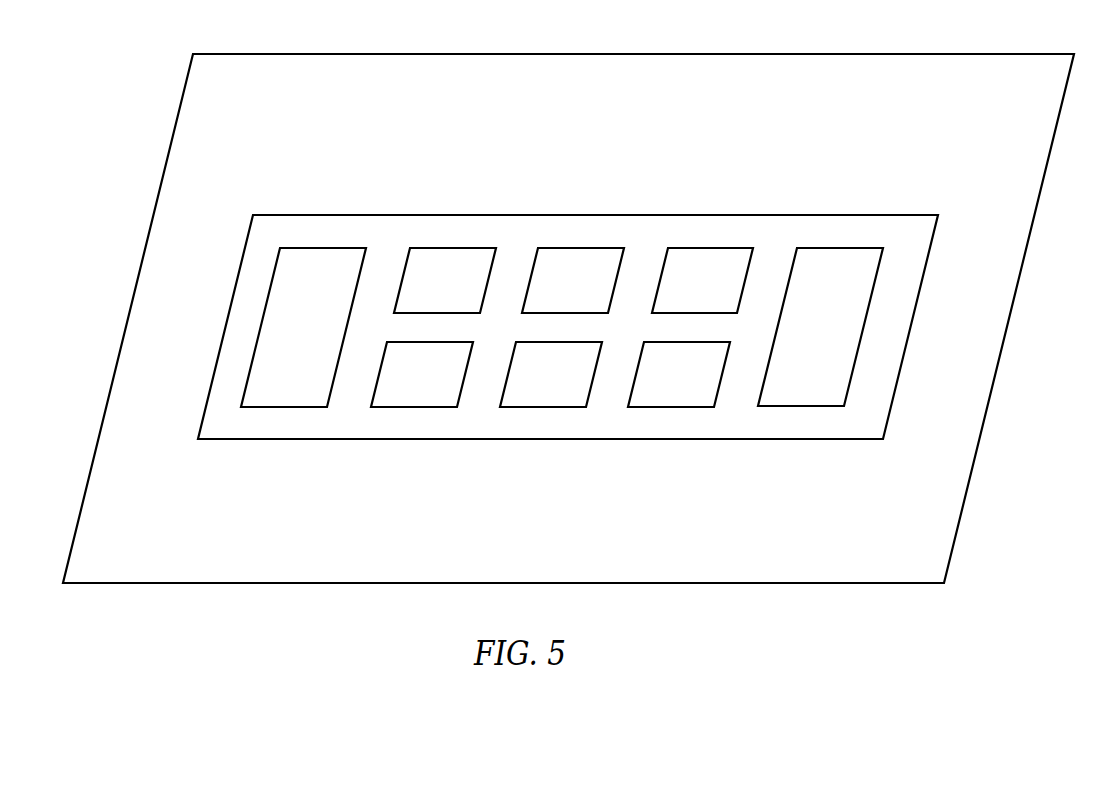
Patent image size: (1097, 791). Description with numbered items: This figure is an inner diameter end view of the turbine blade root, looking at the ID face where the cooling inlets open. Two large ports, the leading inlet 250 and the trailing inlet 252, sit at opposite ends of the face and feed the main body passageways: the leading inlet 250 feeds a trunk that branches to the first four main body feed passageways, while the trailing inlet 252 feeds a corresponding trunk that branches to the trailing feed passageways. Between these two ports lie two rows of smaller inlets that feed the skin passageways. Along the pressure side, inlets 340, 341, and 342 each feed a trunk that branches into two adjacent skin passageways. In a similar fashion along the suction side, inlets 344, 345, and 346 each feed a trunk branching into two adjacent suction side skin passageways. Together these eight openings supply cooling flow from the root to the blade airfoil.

The leading inlet port 250 is at (287, 385).
The trailing inlet port 252 is at (832, 288).
The inlet 340 is at (453, 273).
The inlet 341 is at (586, 275).
The inlet 342 is at (705, 276).
The inlet 344 is at (425, 379).
The inlet 345 is at (561, 379).
The inlet 346 is at (691, 372).